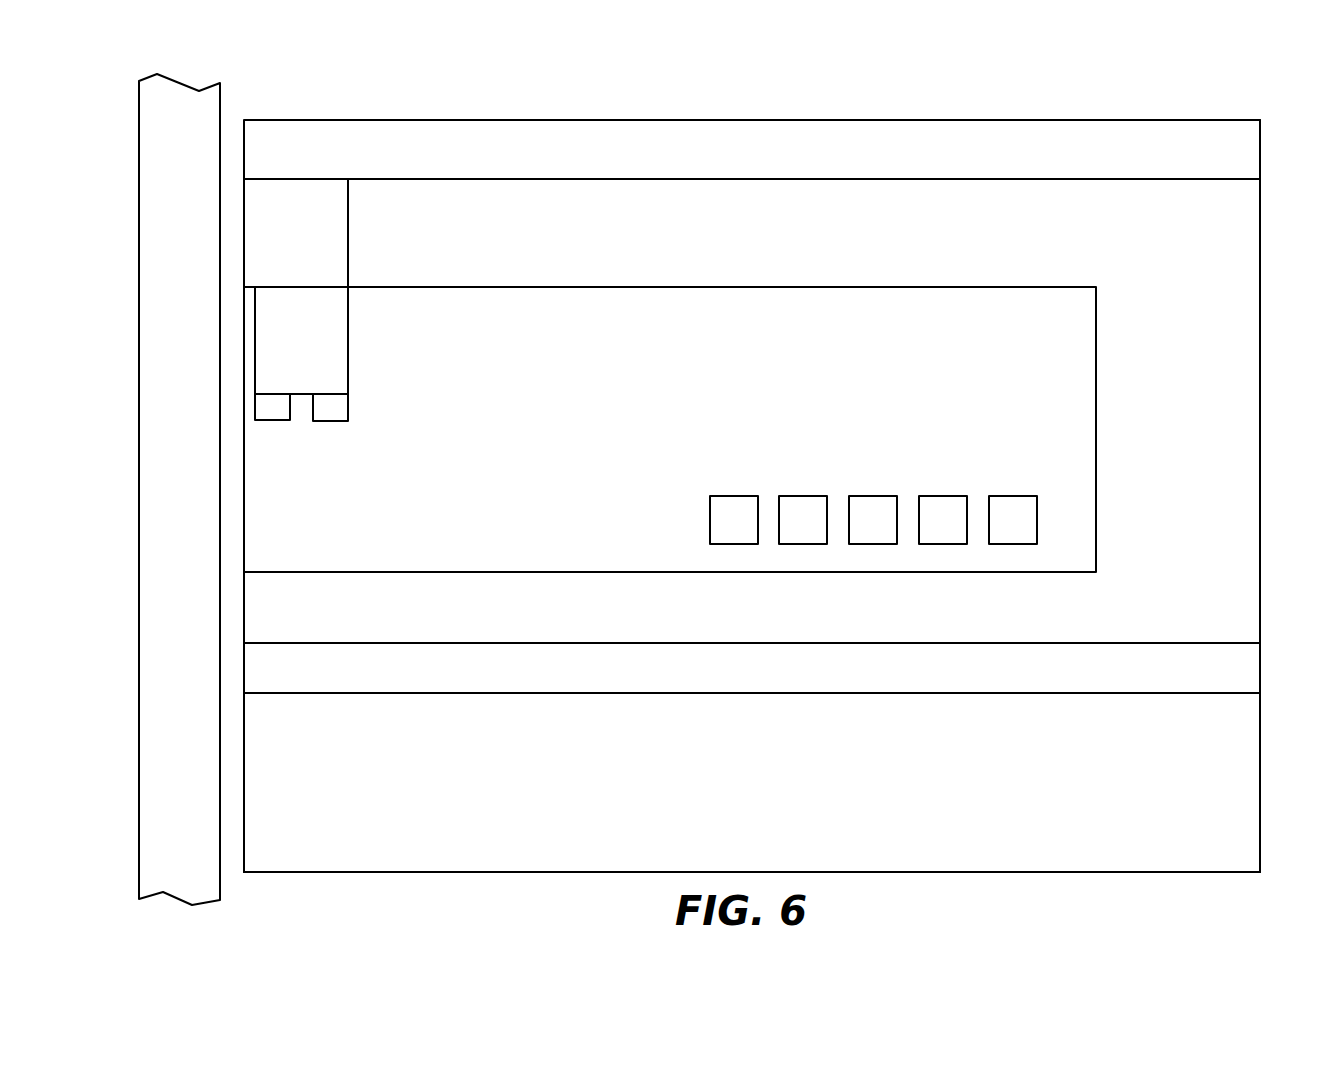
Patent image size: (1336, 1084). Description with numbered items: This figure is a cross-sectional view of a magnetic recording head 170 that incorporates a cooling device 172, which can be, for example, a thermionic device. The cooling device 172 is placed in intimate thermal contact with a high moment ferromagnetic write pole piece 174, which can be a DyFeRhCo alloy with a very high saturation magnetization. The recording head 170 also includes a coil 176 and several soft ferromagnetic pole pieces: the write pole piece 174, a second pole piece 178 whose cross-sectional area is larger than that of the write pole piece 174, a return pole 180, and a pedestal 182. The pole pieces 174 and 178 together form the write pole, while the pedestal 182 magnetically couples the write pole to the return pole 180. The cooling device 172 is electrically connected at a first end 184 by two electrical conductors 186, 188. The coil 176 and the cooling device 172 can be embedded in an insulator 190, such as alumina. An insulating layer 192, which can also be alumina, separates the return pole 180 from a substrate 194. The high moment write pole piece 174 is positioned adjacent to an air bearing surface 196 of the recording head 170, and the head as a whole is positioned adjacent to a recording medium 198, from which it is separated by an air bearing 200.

The magnetic recording head 170 is at (1214, 111).
The cooling device 172 is at (338, 337).
The high moment ferromagnetic write pole piece 174 is at (298, 186).
The coil 176 is at (923, 468).
The pole piece 178 is at (677, 198).
The return pole 180 is at (655, 623).
The pedestal 182 is at (1235, 557).
The first end 184 is at (305, 394).
The electrical conductor 186 is at (277, 412).
The electrical conductor 188 is at (332, 415).
The insulator 190 is at (908, 302).
The insulating layer 192 is at (917, 675).
The substrate 194 is at (962, 853).
The air bearing surface 196 is at (244, 510).
The recording medium 198 is at (139, 702).
The air bearing 200 is at (232, 872).